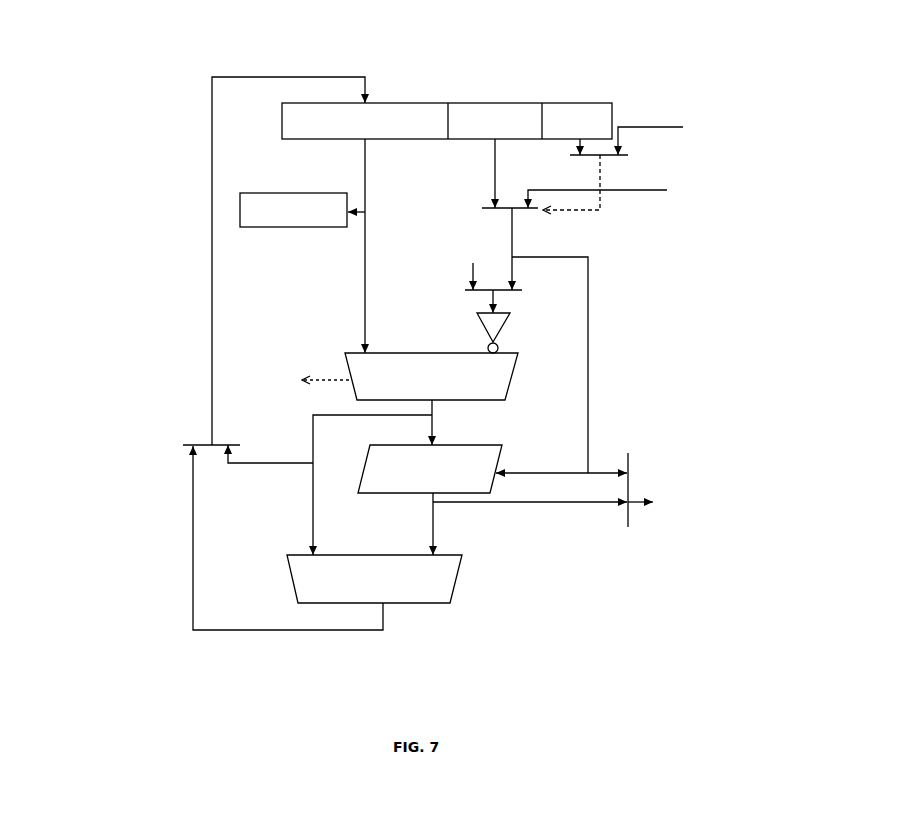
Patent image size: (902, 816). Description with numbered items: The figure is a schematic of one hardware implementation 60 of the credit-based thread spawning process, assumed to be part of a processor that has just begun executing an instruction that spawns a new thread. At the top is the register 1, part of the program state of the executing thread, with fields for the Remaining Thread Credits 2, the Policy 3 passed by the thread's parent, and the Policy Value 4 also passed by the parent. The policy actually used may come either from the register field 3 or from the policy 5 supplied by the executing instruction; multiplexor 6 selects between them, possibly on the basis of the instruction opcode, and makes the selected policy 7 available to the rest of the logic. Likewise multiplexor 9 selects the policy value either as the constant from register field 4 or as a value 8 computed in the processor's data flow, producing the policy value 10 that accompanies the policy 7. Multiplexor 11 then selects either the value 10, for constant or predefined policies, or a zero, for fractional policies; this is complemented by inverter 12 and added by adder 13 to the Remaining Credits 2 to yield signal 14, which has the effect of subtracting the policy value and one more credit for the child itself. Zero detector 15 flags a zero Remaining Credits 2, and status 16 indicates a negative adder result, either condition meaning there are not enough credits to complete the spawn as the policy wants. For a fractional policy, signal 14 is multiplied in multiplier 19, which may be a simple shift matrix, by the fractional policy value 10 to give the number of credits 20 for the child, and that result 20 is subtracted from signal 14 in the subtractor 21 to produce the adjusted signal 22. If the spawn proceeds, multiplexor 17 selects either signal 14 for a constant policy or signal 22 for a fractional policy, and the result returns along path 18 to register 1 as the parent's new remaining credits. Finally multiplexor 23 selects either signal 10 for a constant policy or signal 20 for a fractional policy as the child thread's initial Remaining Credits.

The hardware implementation 60 is at (105, 75).
The register 1 is at (439, 121).
The Remaining Thread Credits 2 is at (366, 246).
The Policy 3 is at (570, 146).
The Policy Value 4 is at (502, 173).
The policy from the instruction 5 is at (719, 132).
The multiplexor 6 is at (589, 162).
The selected policy 7 is at (604, 182).
The computed value from the data flow 8 is at (704, 202).
The multiplexor 9 is at (503, 210).
The policy value 10 is at (576, 340).
The multiplexor 11 is at (484, 273).
The inverter 12 is at (485, 321).
The adder 13 is at (419, 369).
The adder output signal 14 is at (342, 477).
The zero detector 15 is at (291, 199).
The status signal 16 is at (290, 372).
The multiplexor 17 is at (198, 446).
The feedback line to register 18 is at (270, 261).
The multiplier 19 is at (426, 465).
The child credit count 20 is at (593, 519).
The subtractor 21 is at (356, 575).
The subtractor 22 is at (288, 538).
The multiplexor 23 is at (567, 506).